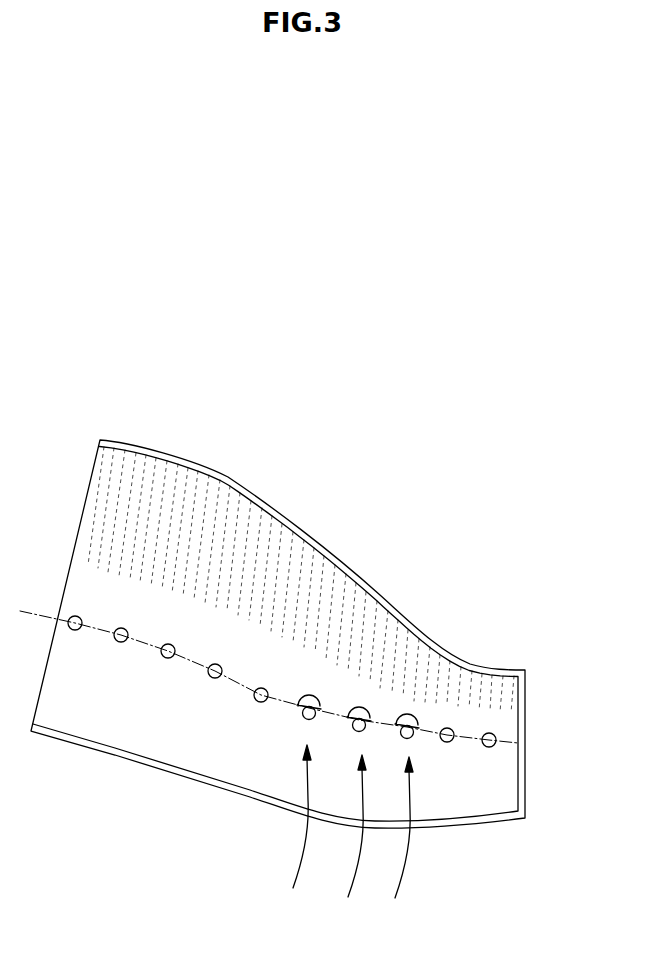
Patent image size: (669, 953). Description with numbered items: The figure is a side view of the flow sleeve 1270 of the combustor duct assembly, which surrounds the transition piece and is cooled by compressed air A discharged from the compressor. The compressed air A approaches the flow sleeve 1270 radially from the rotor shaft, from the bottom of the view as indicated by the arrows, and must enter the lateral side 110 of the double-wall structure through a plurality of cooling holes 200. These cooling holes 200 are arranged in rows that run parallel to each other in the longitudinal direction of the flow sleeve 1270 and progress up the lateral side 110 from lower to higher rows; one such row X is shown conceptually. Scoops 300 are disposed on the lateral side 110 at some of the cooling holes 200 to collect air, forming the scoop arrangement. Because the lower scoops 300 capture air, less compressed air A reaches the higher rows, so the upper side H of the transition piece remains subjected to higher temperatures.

The flow sleeve 1270 is at (405, 368).
The lateral side 110 is at (488, 773).
The cooling holes 200 is at (214, 680).
The scoops 300 is at (408, 718).
The upper side of the transition piece H is at (333, 610).
The row of cooling holes X is at (518, 742).
The compressed air A is at (353, 834).